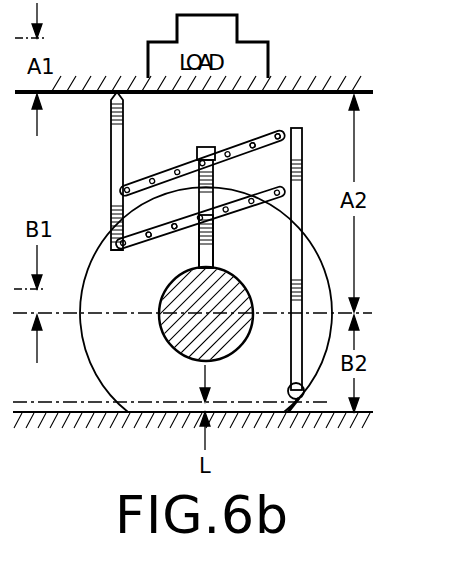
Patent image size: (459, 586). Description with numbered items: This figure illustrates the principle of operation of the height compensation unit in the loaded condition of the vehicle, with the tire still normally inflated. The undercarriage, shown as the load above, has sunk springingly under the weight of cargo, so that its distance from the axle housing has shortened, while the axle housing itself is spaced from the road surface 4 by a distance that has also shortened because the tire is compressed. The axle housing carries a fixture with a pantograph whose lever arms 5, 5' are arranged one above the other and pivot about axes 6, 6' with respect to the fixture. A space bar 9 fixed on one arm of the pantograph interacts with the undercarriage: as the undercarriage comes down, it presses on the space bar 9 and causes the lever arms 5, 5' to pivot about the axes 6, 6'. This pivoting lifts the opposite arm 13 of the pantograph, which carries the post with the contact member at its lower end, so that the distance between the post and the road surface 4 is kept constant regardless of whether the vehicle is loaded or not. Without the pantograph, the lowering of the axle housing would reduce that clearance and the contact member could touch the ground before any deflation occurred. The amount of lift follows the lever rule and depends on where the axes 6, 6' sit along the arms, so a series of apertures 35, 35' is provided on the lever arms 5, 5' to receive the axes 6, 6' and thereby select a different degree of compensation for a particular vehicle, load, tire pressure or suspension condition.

The road surface 4 is at (306, 413).
The space bar 9 is at (111, 128).
The opposite arm 13 is at (300, 155).
The axis 6 is at (190, 200).
The axis 6' is at (222, 241).
The lever arm 5 is at (202, 153).
The lever arm 5' is at (200, 217).
The apertures 35 is at (268, 123).
The apertures 35' is at (155, 253).